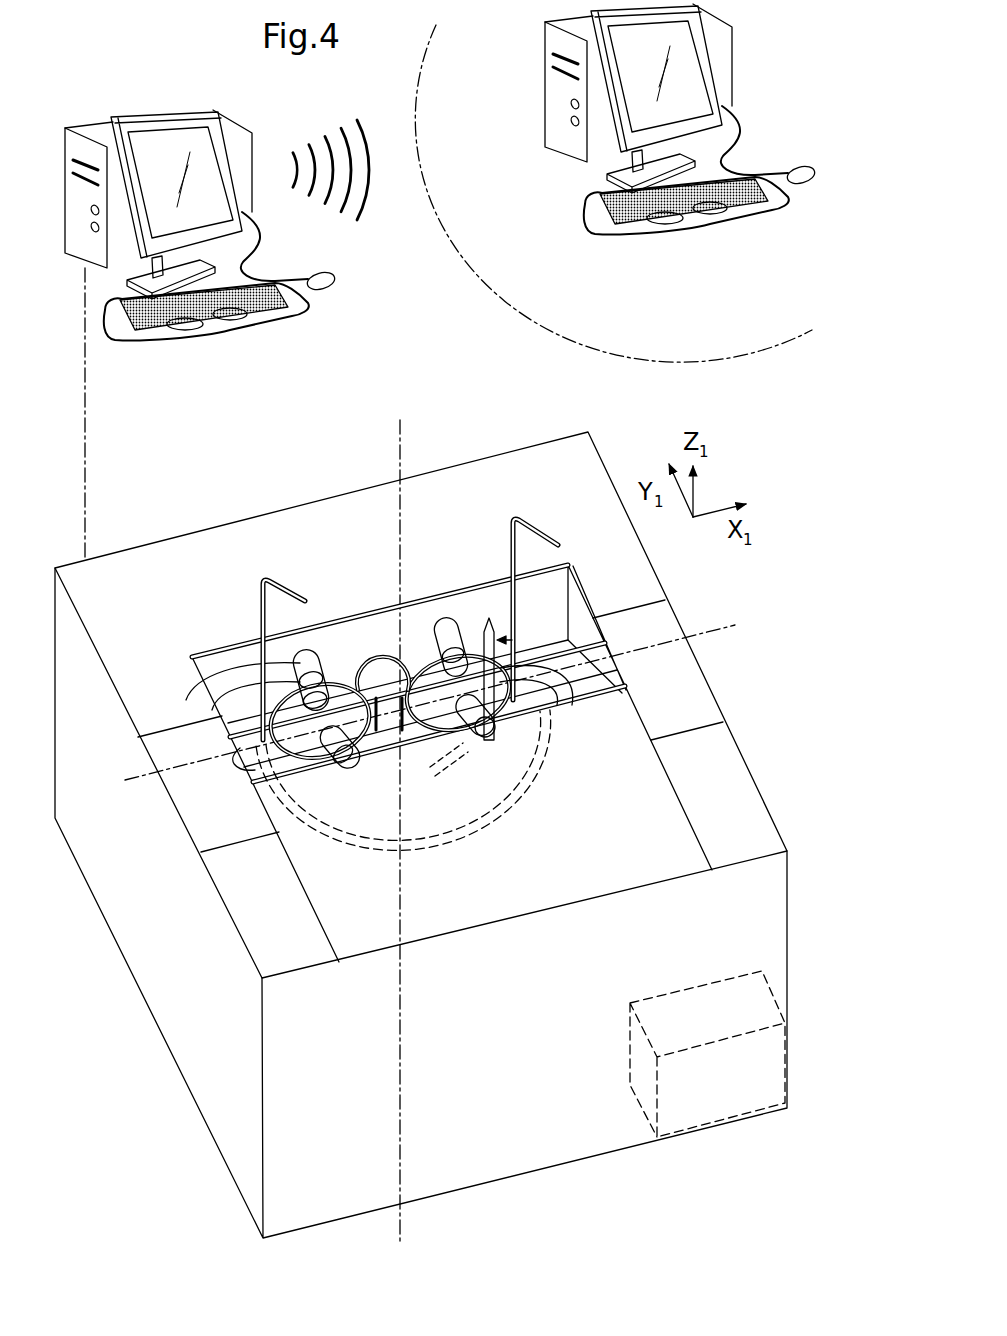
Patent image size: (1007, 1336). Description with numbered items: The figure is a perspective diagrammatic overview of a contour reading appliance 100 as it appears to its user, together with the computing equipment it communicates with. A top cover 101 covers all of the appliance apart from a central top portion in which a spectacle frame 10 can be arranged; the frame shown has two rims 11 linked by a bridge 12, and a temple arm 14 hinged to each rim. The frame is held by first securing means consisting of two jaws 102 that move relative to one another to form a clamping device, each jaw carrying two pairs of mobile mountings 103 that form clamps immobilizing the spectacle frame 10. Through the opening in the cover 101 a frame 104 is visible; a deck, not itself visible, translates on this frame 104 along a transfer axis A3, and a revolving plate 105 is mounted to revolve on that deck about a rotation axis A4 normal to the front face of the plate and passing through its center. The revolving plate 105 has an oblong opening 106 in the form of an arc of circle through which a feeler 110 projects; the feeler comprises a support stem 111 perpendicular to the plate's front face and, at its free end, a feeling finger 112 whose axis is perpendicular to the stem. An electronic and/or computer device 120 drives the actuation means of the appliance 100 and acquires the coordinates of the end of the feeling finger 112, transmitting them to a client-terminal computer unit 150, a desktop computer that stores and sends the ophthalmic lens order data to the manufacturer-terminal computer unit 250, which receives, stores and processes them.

The full-rim spectacle frame 10 is at (418, 742).
The rims 11 is at (302, 758).
The bridge 12 is at (380, 672).
The temple arm 14 is at (262, 590).
The contour reading appliance 100 is at (222, 508).
The top cover 101 is at (736, 758).
The jaws 102 is at (214, 655).
The mobile mountings 103 is at (230, 698).
The frame 104 is at (560, 700).
The revolving plate 105 is at (255, 768).
The oblong opening 106 is at (468, 748).
The feeler 110 is at (570, 572).
The support stem 111 is at (490, 733).
The feeling finger 112 is at (487, 625).
The electronic and/or computer device 120 is at (731, 1105).
The computer unit 150 is at (100, 114).
The computer unit 250 is at (565, 190).
The transfer axis A3 is at (141, 778).
The rotation axis A4 is at (398, 452).